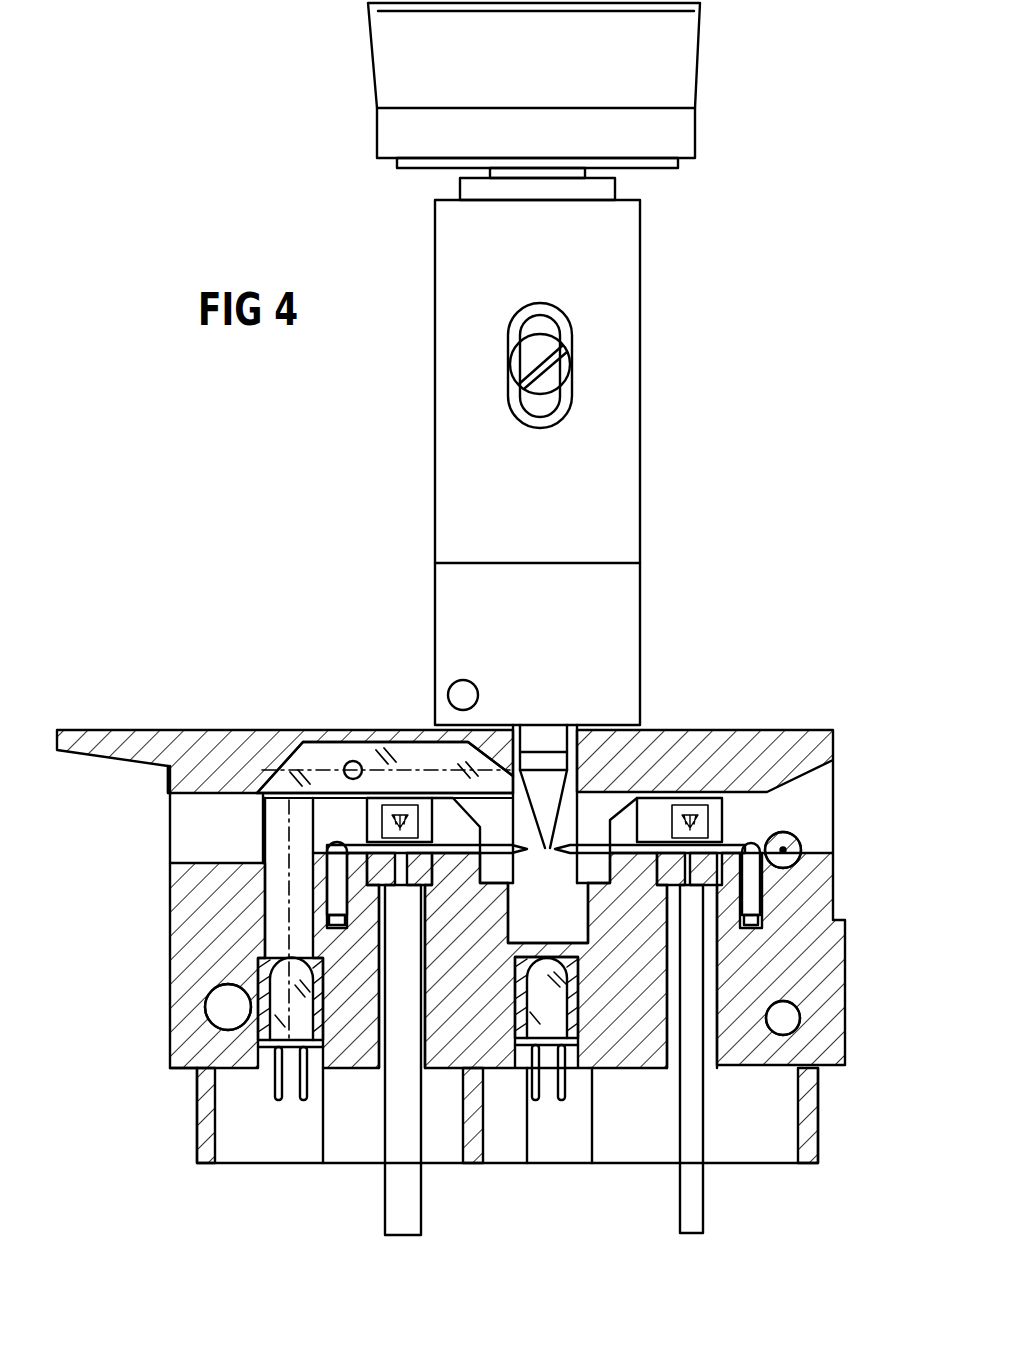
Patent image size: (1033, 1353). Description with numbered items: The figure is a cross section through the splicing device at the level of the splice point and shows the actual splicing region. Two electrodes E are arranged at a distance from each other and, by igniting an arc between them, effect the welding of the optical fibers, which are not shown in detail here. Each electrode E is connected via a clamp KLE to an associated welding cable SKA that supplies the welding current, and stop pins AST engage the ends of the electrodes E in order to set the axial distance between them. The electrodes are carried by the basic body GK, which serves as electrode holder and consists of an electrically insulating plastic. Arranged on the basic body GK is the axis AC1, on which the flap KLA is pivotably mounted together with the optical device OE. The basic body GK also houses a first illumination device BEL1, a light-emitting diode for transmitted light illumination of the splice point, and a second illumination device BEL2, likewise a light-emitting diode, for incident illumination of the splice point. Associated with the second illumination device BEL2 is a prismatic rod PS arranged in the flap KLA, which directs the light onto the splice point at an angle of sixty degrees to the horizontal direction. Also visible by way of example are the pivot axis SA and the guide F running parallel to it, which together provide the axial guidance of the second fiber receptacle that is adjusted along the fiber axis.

The optical device OE is at (676, 380).
The flap KLA is at (752, 735).
The prismatic rod PS is at (268, 758).
The electrodes E is at (452, 790).
The clamps KLE is at (368, 816).
The stop pins AST is at (335, 850).
The axis AC1 is at (788, 848).
The basic body GK is at (840, 1038).
The guide F is at (790, 1018).
The pivot axis SA is at (216, 1016).
The second illumination device BEL2 is at (258, 982).
The first illumination device BEL1 is at (550, 1027).
The welding cables SKA is at (385, 1208).